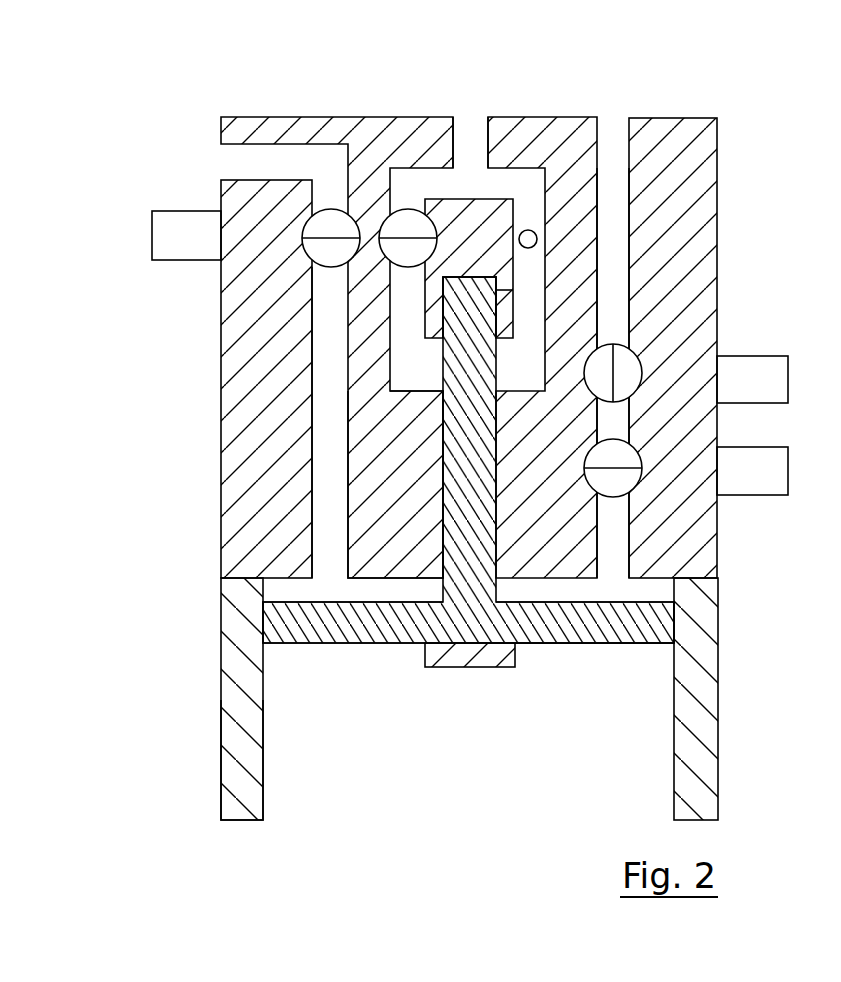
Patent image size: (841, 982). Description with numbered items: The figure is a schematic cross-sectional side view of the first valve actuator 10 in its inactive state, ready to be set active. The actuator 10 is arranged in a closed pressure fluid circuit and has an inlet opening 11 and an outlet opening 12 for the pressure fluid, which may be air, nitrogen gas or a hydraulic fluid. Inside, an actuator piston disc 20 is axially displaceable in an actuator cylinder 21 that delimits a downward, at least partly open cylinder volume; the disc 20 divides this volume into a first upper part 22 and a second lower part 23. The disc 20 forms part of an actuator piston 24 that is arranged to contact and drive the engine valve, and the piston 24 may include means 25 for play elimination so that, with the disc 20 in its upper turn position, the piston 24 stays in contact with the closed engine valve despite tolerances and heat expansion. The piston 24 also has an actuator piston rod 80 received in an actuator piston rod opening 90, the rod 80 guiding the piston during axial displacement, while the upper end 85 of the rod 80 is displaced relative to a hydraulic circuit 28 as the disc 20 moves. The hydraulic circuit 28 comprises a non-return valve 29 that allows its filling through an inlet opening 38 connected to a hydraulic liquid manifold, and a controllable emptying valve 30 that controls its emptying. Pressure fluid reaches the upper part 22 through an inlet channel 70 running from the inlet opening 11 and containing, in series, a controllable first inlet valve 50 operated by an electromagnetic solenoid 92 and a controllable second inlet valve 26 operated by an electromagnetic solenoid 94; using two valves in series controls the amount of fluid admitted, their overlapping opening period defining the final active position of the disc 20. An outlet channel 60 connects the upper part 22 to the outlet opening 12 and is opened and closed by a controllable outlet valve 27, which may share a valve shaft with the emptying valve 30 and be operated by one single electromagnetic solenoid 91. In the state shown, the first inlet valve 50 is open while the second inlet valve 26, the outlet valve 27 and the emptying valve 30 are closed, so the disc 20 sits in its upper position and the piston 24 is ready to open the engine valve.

The first valve actuator 10 is at (752, 166).
The inlet opening 11 is at (612, 130).
The outlet opening 12 is at (247, 165).
The actuator piston disc 20 is at (650, 620).
The actuator cylinder 21 is at (692, 707).
The first upper part of cylinder volume 22 is at (277, 593).
The second lower part of cylinder volume 23 is at (293, 795).
The actuator piston 24 is at (549, 661).
The means for play elimination 25 is at (458, 657).
The controllable second inlet valve 26 is at (627, 468).
The controllable outlet valve 27 is at (307, 253).
The hydraulic circuit 28 is at (469, 124).
The non-return valve 29 is at (528, 230).
The controllable emptying valve 30 is at (393, 237).
The inlet opening of hydraulic circuit 38 is at (460, 120).
The controllable first inlet valve 50 is at (627, 372).
The outlet channel 60 is at (335, 353).
The inlet channel 70 is at (612, 280).
The actuator piston rod 80 is at (467, 503).
The upper end of actuator piston rod 85 is at (465, 277).
The actuator piston rod opening 90 is at (442, 392).
The electromagnetic solenoid 91 is at (197, 236).
The electromagnetic solenoid 92 is at (727, 375).
The electromagnetic solenoid 94 is at (765, 473).